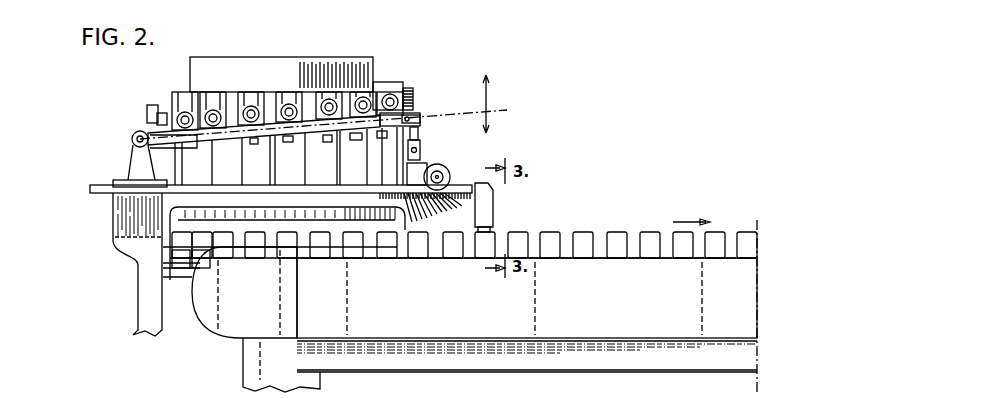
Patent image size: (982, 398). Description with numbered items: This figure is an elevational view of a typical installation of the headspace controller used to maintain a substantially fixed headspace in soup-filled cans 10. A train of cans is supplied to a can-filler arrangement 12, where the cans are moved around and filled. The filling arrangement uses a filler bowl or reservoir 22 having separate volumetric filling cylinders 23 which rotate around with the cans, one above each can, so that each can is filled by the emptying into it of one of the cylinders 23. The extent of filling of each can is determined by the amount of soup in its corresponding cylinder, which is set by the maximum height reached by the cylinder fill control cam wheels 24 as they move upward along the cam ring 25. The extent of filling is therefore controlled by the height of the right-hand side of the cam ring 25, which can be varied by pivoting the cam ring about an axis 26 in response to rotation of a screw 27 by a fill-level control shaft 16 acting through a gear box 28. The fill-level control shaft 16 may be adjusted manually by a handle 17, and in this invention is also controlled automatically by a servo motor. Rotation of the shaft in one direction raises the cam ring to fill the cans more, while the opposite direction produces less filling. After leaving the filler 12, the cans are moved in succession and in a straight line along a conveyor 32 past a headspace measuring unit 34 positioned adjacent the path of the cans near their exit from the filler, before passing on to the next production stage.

The cans 10 is at (596, 232).
The can-filler arrangement 12 is at (402, 81).
The fill-level control shaft 16 is at (431, 167).
The handle 17 is at (446, 176).
The filler bowl 22 is at (232, 66).
The volumetric filling cylinders 23 is at (180, 98).
The cylinder fill control cam wheels 24 is at (187, 112).
The cam ring 25 is at (313, 132).
The axis 26 is at (133, 140).
The screw 27 is at (413, 106).
The gear box 28 is at (420, 157).
The conveyor 32 is at (629, 295).
The headspace measuring unit 34 is at (492, 196).